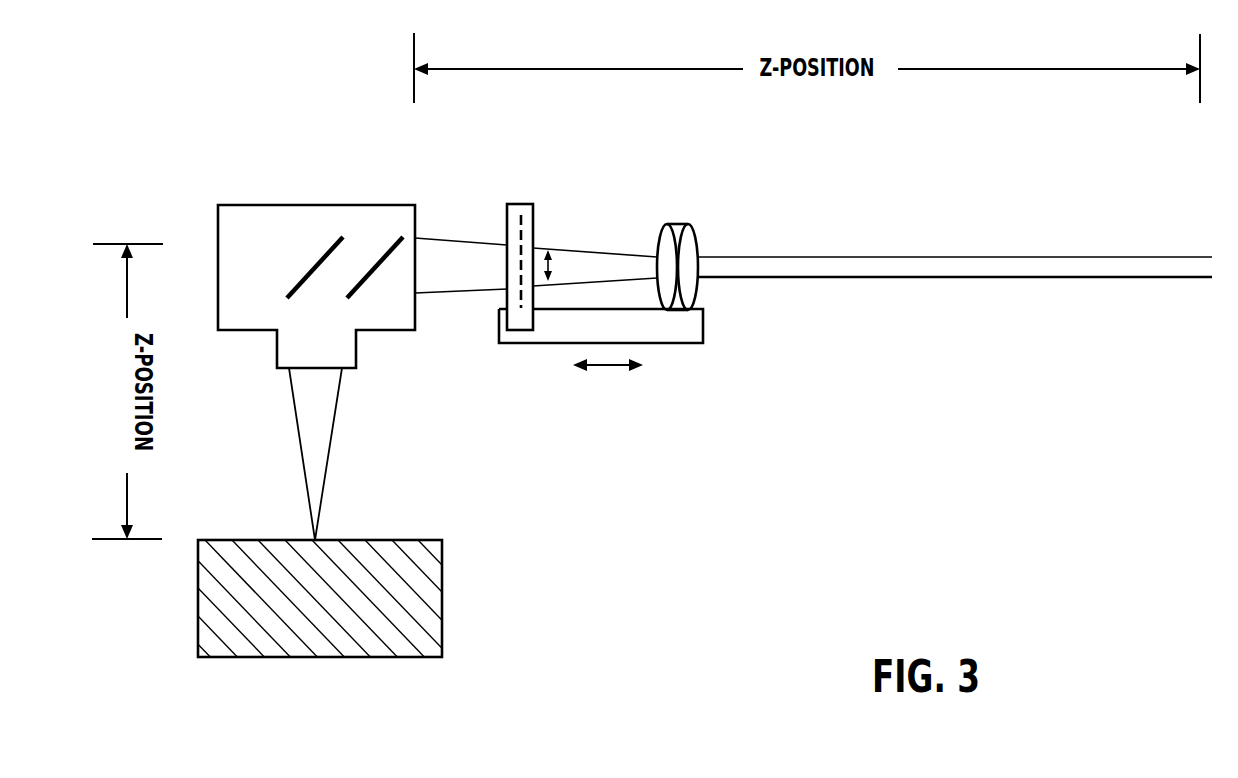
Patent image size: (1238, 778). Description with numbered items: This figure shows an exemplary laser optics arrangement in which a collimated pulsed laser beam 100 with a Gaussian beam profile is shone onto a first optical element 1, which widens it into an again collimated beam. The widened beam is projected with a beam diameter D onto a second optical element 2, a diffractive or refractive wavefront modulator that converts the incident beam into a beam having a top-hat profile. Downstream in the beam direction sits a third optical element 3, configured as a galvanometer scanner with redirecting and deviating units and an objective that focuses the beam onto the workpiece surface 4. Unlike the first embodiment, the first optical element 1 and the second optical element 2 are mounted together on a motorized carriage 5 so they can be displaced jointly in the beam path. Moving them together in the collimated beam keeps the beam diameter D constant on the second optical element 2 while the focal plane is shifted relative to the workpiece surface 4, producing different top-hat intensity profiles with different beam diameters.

The first optical element 1 is at (677, 226).
The second optical element 2 is at (525, 201).
The third optical element 3 is at (378, 215).
The workpiece surface 4 is at (353, 644).
The carriage 5 is at (680, 333).
The laser beam 100 is at (1058, 268).
The beam diameter D is at (550, 268).